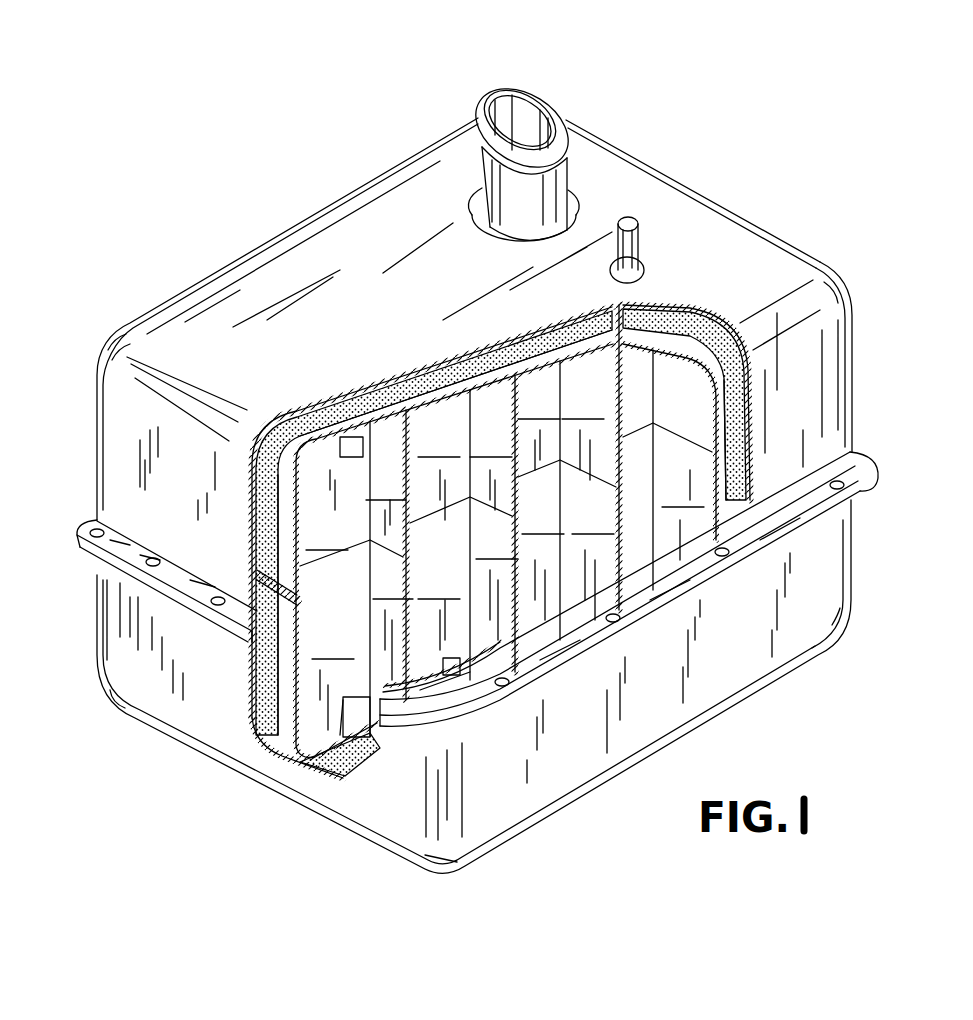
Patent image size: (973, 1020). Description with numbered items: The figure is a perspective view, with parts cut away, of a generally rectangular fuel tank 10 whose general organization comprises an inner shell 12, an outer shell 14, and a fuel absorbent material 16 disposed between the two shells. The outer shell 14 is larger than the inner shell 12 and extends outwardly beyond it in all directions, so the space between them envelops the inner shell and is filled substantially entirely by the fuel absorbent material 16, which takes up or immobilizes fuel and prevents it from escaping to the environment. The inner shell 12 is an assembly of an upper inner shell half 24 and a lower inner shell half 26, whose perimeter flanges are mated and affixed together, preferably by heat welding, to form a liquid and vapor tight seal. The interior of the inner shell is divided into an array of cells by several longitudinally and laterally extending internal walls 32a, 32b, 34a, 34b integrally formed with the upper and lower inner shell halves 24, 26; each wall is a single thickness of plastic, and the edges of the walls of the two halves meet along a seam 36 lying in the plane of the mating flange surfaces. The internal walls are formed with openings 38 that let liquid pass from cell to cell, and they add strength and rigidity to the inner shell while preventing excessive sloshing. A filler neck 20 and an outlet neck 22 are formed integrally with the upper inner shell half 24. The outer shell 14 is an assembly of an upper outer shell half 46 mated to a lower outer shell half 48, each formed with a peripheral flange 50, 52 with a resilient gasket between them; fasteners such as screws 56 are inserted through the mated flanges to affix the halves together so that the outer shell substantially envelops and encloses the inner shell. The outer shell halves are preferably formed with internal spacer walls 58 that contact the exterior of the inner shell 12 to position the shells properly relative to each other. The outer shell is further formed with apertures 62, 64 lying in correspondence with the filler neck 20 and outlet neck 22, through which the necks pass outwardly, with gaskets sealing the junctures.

The fuel tank 10 is at (870, 304).
The inner shell 12 is at (304, 632).
The outer shell 14 is at (767, 226).
The fuel absorbent material 16 is at (305, 410).
The filler neck 20 is at (540, 95).
The outlet neck 22 is at (657, 213).
The upper inner shell half 24 is at (304, 500).
The lower inner shell half 26 is at (300, 600).
The internal wall 32a is at (433, 471).
The internal wall 32b is at (439, 619).
The internal wall 34a is at (485, 464).
The internal wall 34b is at (539, 575).
The seam 36 is at (452, 516).
The opening 38 is at (345, 452).
The upper outer shell half 46 is at (822, 262).
The lower outer shell half 48 is at (852, 605).
The peripheral flange 50 is at (876, 458).
The peripheral flange 52 is at (880, 488).
The screw 56 is at (153, 560).
The internal spacer wall 58 is at (406, 412).
The aperture 62 is at (472, 193).
The aperture 64 is at (645, 268).